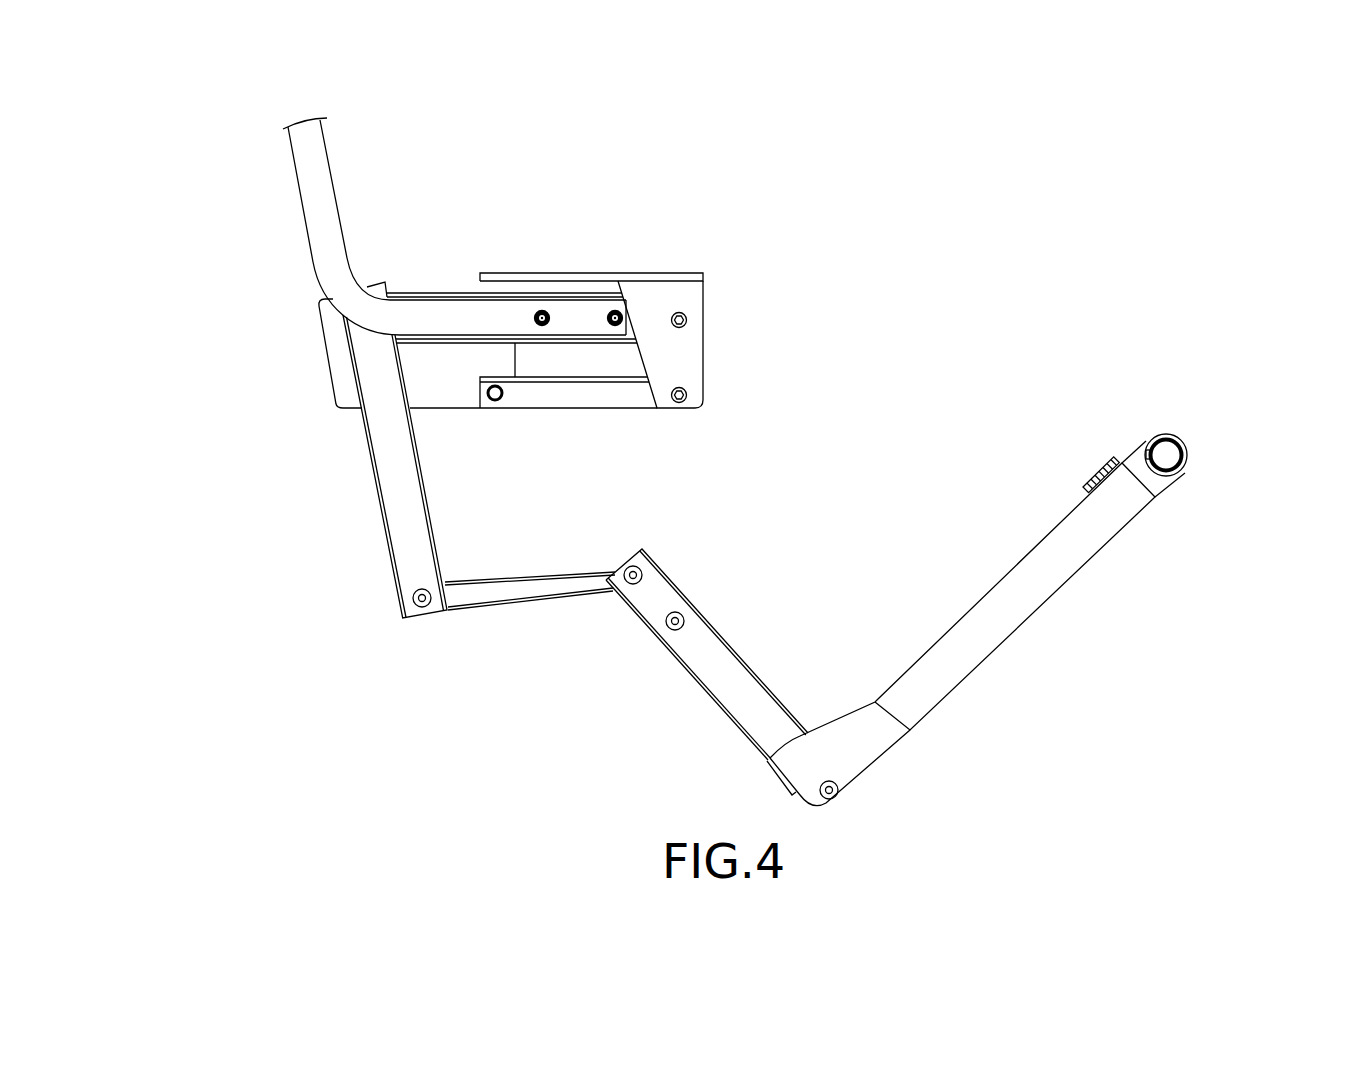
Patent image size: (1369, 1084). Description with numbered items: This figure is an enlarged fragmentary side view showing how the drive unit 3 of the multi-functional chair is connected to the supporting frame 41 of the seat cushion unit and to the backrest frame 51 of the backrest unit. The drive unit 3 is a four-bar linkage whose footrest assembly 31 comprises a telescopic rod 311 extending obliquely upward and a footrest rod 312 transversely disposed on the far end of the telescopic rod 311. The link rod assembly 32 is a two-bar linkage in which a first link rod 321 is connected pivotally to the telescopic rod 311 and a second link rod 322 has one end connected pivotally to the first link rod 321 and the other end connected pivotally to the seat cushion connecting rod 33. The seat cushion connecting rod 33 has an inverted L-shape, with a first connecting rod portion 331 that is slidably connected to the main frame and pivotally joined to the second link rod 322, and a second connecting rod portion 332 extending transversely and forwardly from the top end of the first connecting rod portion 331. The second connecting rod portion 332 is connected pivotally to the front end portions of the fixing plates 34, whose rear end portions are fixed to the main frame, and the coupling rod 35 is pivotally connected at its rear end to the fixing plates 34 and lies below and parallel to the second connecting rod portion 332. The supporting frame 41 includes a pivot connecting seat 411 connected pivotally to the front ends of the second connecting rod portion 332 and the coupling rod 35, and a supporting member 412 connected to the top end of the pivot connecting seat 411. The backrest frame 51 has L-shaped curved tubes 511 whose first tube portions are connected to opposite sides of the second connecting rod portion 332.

The drive unit 3 is at (1203, 436).
The footrest assembly 31 is at (1008, 623).
The telescopic rod 311 is at (1027, 593).
The footrest rod 312 is at (1158, 440).
The link rod assembly 32 is at (743, 652).
The first link rod 321 is at (728, 667).
The second link rod 322 is at (538, 582).
The seat cushion connecting rod 33 is at (307, 466).
The first connecting rod portion 331 is at (402, 498).
The second connecting rod portion 332 is at (435, 296).
The fixing plates 34 is at (343, 358).
The coupling rod 35 is at (605, 398).
The supporting frame 41 is at (629, 344).
The pivot connecting seat 411 is at (688, 348).
The supporting member 412 is at (590, 273).
The backrest frame 51 is at (368, 226).
The curved tubes 511 is at (320, 204).